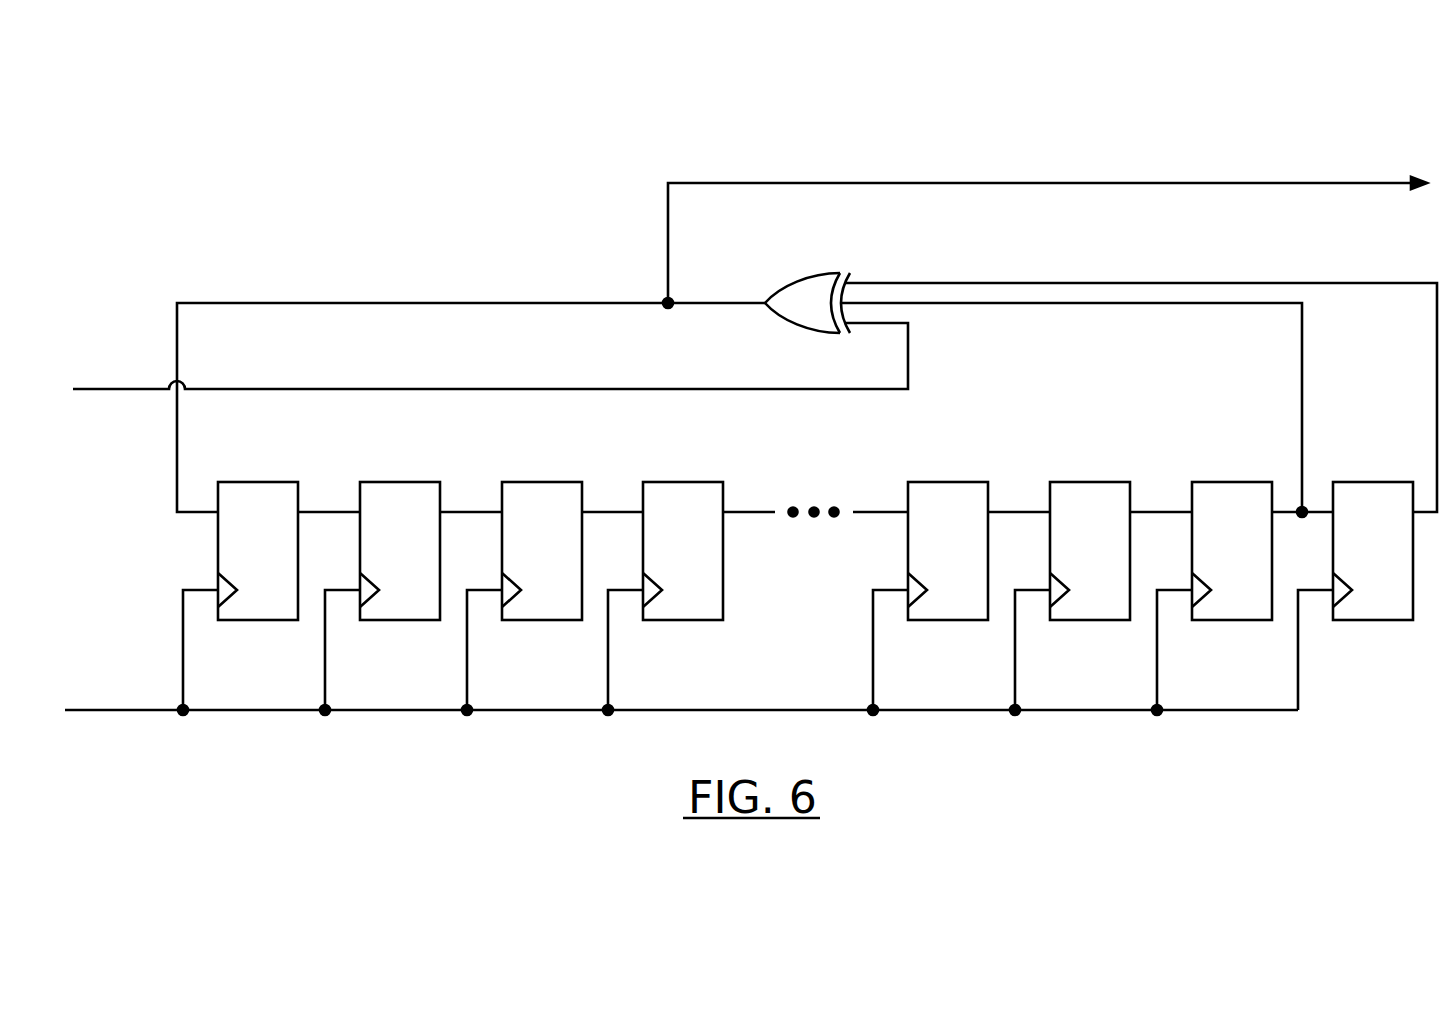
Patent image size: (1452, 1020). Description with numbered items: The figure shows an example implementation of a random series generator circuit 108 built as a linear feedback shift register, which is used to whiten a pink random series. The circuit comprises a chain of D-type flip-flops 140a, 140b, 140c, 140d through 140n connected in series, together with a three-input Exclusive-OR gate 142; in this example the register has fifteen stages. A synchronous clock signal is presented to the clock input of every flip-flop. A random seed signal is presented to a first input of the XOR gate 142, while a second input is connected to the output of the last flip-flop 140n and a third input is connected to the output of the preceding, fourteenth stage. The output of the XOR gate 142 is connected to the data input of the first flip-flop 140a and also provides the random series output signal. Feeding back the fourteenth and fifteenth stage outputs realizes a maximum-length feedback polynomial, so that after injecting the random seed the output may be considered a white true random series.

The random series generator circuit 108 is at (751, 384).
The Exclusive-OR gate 142 is at (798, 277).
The D-type flip-flop 140a is at (263, 482).
The D-type flip-flop 140b is at (391, 482).
The D-type flip-flop 140c is at (533, 482).
The D-type flip-flop 140d is at (673, 482).
The D-type flip-flop 140n is at (1376, 482).